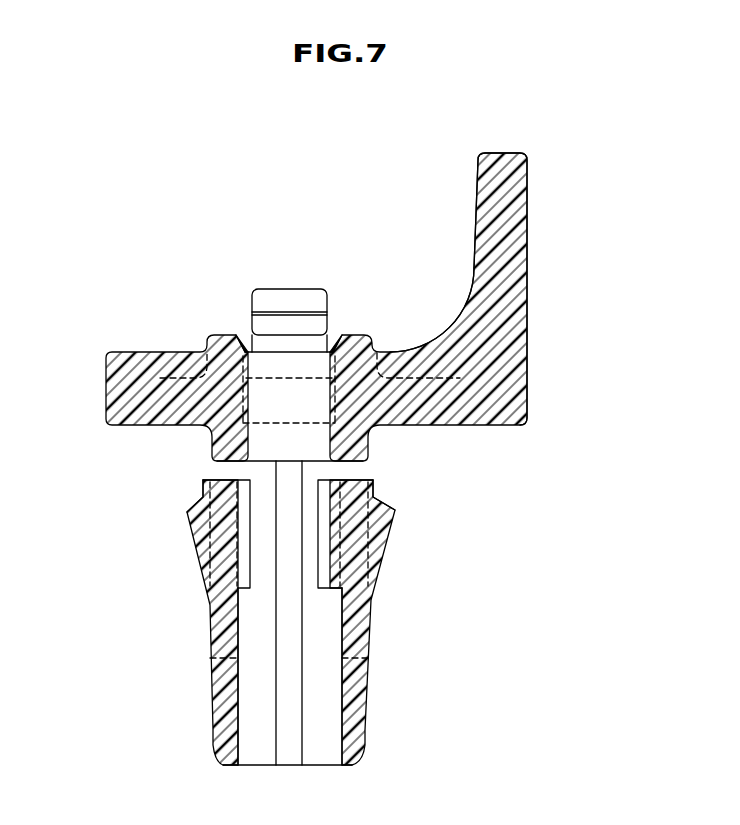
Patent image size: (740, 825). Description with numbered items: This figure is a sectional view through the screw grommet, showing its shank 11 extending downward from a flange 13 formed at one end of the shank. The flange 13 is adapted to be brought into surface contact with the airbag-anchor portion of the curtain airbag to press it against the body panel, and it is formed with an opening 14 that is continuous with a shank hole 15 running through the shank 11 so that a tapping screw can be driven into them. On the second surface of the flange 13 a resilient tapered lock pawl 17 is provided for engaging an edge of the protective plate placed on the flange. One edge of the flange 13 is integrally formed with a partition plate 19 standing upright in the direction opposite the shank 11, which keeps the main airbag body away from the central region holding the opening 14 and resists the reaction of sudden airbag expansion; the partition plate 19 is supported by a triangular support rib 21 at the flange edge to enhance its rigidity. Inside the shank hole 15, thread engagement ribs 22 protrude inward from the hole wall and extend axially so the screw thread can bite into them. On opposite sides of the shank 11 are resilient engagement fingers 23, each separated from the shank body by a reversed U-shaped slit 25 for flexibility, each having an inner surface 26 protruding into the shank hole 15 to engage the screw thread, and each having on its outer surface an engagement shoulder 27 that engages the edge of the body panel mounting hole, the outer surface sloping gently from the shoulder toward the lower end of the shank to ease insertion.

The shank 11 is at (368, 640).
The flange 13 is at (113, 400).
The opening 14 is at (247, 350).
The shank hole 15 is at (258, 665).
The resilient tapered lock pawl 17 is at (296, 289).
The partition plate 19 is at (527, 210).
The triangular support rib 21 is at (455, 318).
The thread engagement rib 22 is at (296, 713).
The resilient engagement finger 23 is at (200, 586).
The reversed U-shaped slit 25 is at (208, 473).
The inner surface 26 is at (255, 543).
The engagement shoulder 27 is at (187, 505).